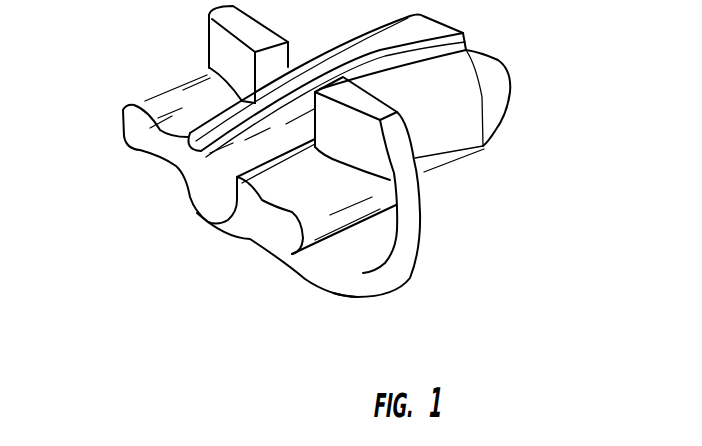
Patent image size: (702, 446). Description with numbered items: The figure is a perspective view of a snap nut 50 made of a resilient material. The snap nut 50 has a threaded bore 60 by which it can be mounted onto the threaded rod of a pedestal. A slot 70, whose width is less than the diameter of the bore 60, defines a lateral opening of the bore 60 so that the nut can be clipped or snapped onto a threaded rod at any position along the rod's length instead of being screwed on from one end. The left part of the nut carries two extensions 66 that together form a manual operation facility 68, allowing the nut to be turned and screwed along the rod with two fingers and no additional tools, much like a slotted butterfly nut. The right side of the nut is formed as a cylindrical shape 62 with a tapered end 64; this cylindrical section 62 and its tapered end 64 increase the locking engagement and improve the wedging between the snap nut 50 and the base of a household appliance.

The snap nut 50 is at (475, 257).
The threaded bore 60 is at (208, 190).
The cylindrical shape 62 is at (443, 135).
The tapered end 64 is at (500, 83).
The extensions 66 is at (289, 226).
The manual operation facility 68 is at (214, 111).
The slot 70 is at (207, 167).